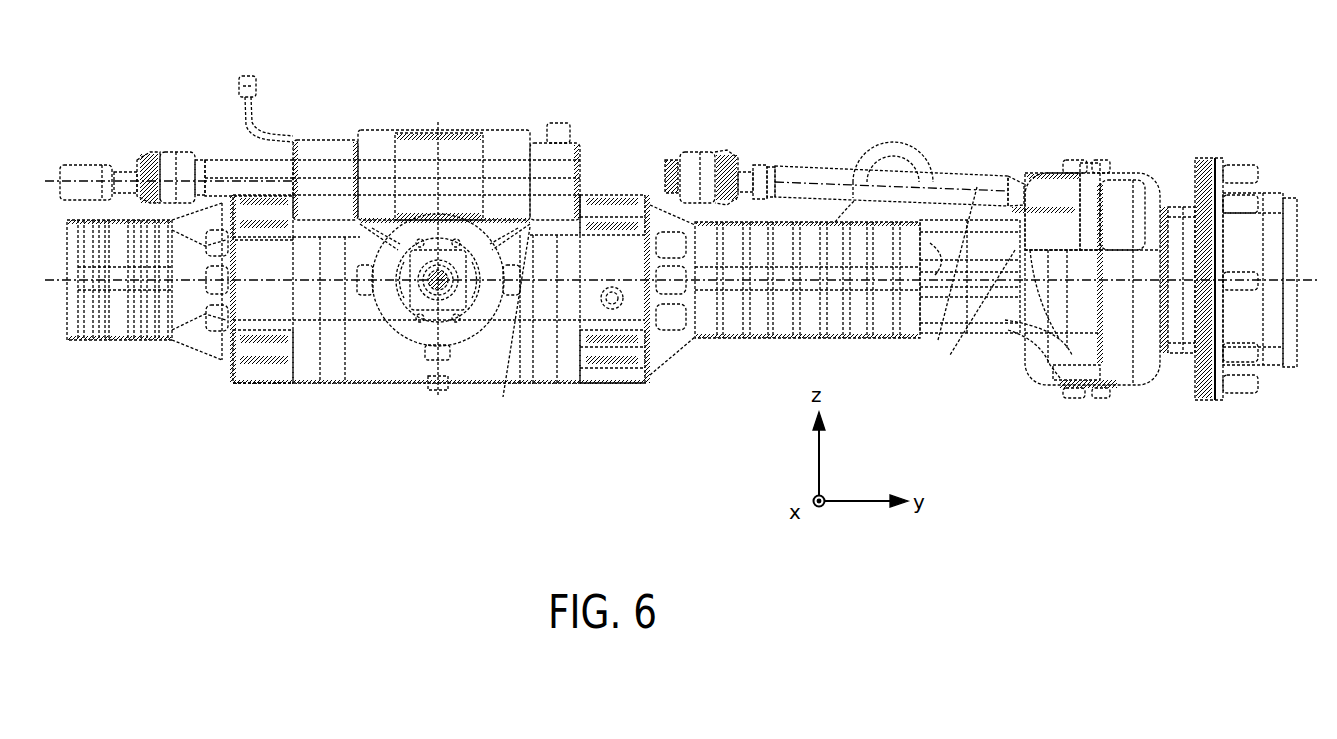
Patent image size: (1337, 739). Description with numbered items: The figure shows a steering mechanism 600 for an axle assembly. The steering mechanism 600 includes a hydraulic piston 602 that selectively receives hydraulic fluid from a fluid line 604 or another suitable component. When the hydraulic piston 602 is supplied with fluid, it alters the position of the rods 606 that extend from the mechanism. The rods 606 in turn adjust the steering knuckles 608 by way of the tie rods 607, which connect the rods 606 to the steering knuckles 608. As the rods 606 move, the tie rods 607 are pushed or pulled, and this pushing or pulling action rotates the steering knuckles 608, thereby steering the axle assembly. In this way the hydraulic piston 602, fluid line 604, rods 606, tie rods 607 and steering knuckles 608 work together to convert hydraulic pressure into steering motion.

The steering mechanism 600 is at (936, 86).
The hydraulic piston 602 is at (473, 98).
The fluid line 604 is at (257, 132).
The rods 606 is at (627, 172).
The tie rods 607 is at (792, 172).
The steering knuckles 608 is at (1099, 138).